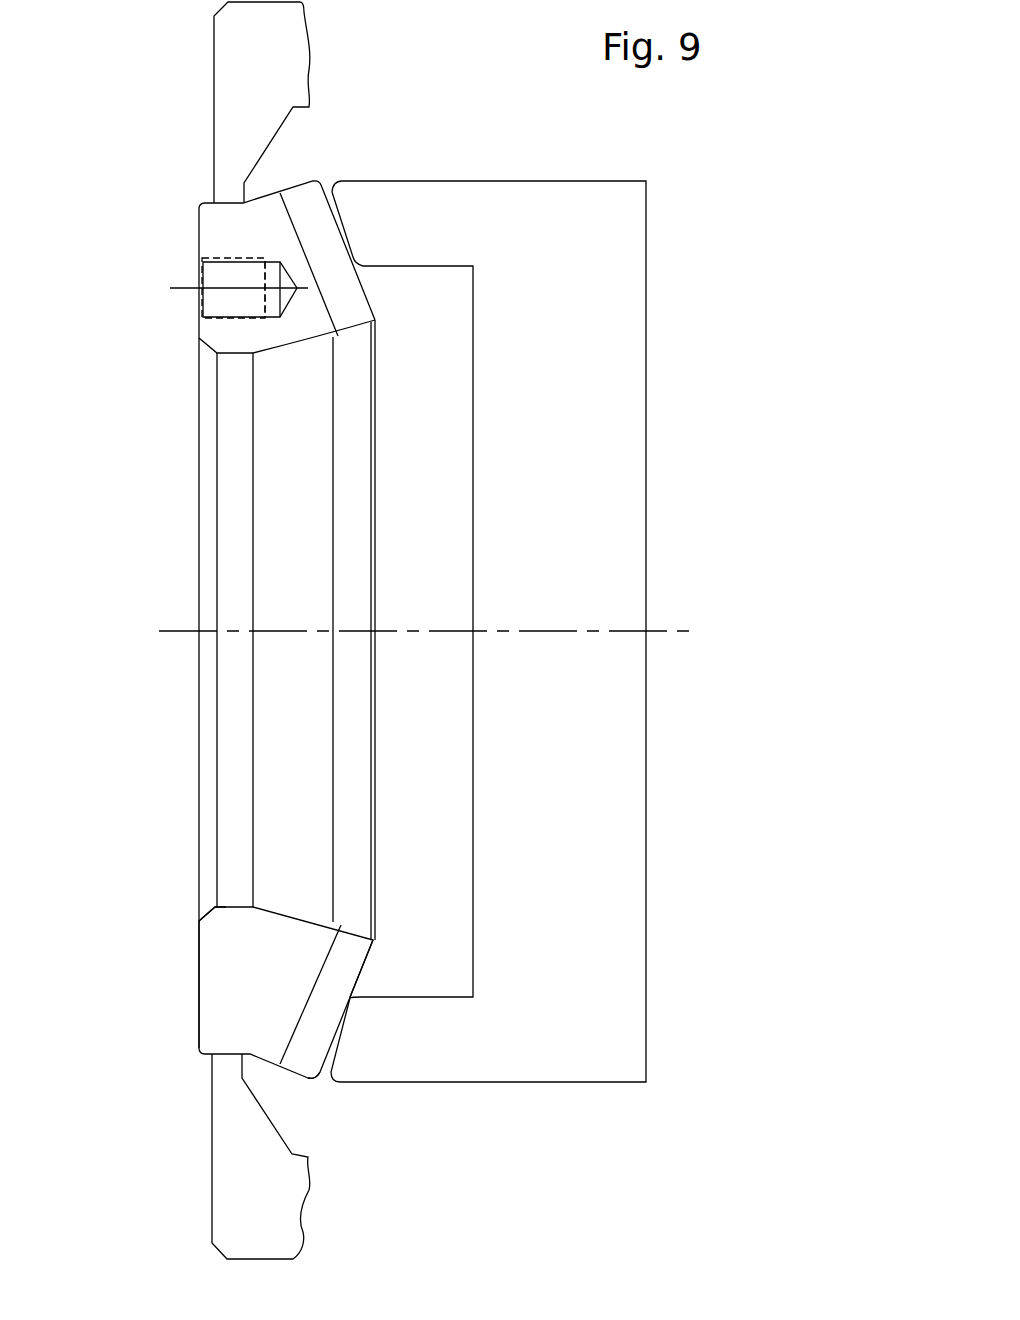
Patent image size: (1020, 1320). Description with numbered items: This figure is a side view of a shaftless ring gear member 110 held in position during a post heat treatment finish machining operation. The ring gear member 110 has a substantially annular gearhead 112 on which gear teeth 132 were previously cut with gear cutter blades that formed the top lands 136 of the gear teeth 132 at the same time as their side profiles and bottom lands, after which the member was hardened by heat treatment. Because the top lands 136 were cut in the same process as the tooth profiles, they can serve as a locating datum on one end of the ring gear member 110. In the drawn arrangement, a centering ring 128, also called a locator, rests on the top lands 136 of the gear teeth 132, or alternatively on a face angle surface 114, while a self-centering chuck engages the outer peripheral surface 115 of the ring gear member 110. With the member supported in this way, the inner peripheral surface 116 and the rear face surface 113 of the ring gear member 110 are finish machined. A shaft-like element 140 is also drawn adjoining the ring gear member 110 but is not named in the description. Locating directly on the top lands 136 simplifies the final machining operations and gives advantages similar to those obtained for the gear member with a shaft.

The ring gear member 110 is at (151, 395).
The gearhead 112 is at (185, 1030).
The rear face surface 113 is at (198, 975).
The face angle surface 114 is at (367, 292).
The outer peripheral surface 115 is at (203, 203).
The inner peripheral surface 116 is at (226, 906).
The centering ring 128 is at (654, 1007).
The gear teeth 132 is at (313, 1062).
The top lands 136 is at (363, 970).
The shaft 140 is at (290, 1238).